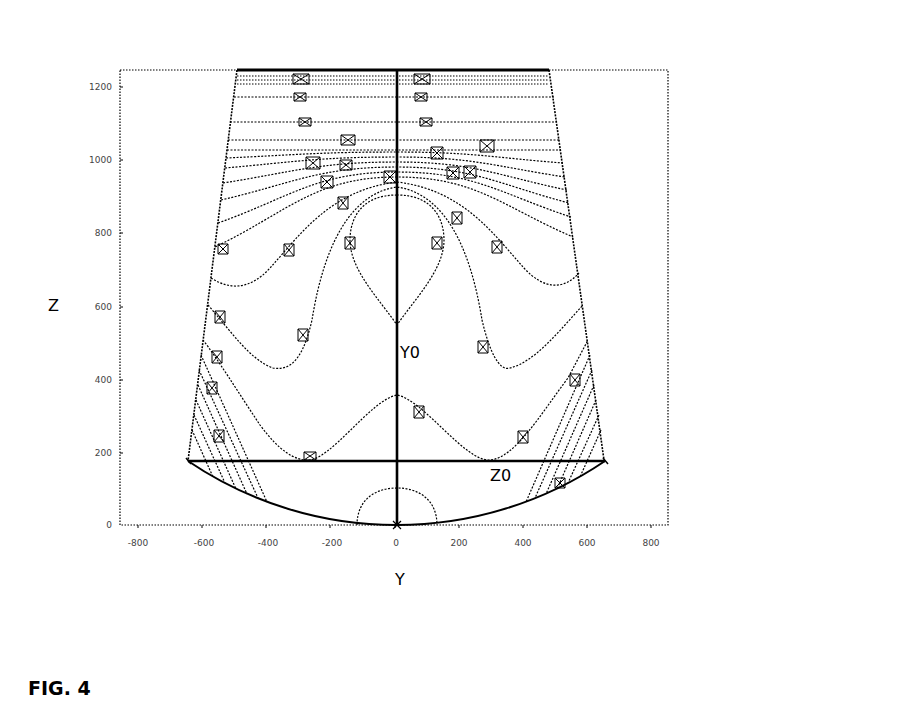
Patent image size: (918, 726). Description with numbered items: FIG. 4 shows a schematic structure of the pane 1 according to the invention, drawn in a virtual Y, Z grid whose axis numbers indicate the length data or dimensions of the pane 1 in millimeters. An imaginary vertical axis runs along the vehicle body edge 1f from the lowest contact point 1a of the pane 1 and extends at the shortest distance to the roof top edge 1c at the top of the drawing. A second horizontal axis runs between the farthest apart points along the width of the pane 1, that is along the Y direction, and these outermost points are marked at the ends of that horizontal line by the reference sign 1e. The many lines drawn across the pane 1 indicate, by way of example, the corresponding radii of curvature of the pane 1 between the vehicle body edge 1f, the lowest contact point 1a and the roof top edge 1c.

The pane 1 is at (587, 285).
The lowest contact point 1a is at (400, 530).
The roof top edge 1c is at (468, 70).
The lower corner 1e is at (179, 455).
The vehicle body edge 1f is at (272, 505).